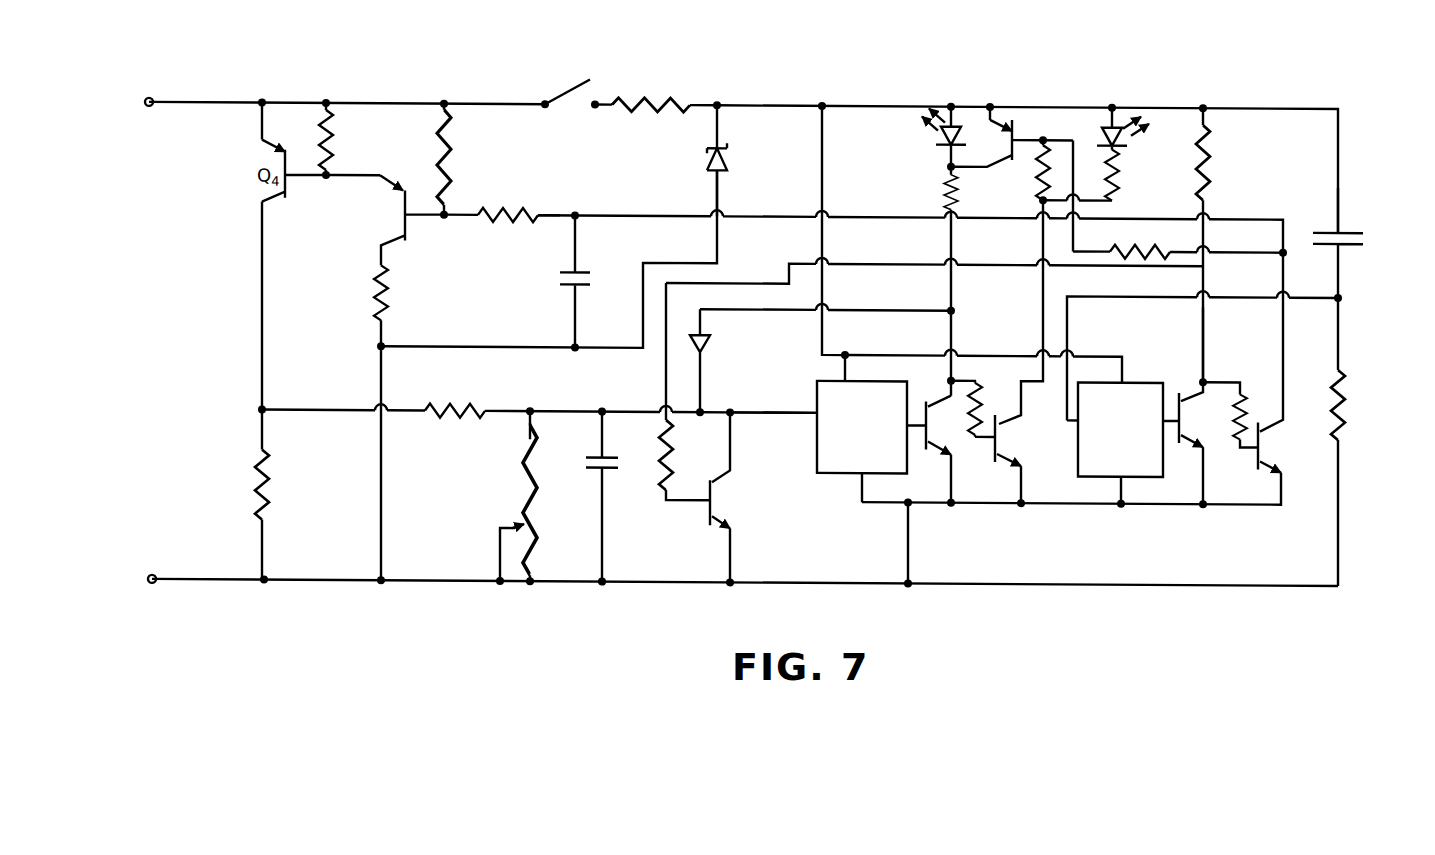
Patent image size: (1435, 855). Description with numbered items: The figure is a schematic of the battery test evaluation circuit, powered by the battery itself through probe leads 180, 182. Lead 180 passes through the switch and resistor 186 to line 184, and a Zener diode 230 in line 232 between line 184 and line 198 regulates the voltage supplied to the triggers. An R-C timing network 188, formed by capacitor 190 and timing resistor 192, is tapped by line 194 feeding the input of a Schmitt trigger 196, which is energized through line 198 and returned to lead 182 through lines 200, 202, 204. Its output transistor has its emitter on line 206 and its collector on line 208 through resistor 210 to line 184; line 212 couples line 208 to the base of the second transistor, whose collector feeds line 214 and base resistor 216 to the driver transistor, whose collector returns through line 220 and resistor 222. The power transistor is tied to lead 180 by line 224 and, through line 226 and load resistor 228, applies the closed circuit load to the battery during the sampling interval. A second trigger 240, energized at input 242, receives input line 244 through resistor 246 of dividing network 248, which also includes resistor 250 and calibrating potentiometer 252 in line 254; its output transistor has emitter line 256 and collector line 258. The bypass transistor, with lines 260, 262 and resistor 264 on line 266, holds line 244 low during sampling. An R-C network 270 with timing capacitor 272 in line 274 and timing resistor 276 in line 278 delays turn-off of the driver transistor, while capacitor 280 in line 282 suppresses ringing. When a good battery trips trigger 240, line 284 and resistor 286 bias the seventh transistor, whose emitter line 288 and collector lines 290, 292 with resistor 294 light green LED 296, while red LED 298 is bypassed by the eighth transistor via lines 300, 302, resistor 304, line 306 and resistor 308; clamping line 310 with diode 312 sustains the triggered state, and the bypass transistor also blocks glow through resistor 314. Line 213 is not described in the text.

The probe lead 180 is at (210, 101).
The probe lead 182 is at (215, 578).
The line 184 is at (753, 101).
The resistor 186 is at (656, 98).
The R-C timing network 188 is at (1362, 236).
The capacitor 190 is at (1322, 228).
The timing resistor 192 is at (1346, 400).
The line 194 is at (1127, 292).
The trigger 196 is at (1128, 429).
The line 198 is at (984, 348).
The line 200 is at (1124, 487).
The line 202 is at (1060, 497).
The line 204 is at (911, 559).
The line 206 is at (1206, 492).
The line 208 is at (1205, 304).
The resistor 210 is at (1215, 162).
The line 212 is at (1227, 376).
The line 213 is at (1234, 426).
The line 214 is at (610, 211).
The base resistor 216 is at (506, 206).
The line 220 is at (384, 254).
The resistor 222 is at (388, 297).
The line 224 is at (265, 134).
The line 226 is at (262, 297).
The resistor 228 is at (260, 489).
The Zener diode 230 is at (730, 150).
The line 232 is at (725, 132).
The trigger 240 is at (871, 442).
The energization input 242 is at (850, 372).
The input line 244 is at (745, 407).
The resistor 246 is at (467, 405).
The dividing network 248 is at (500, 487).
The resistor 250 is at (522, 452).
The calibrating potentiometer 252 is at (537, 545).
The line 254 is at (536, 426).
The line 256 is at (953, 488).
The line 258 is at (955, 296).
The line 260 is at (728, 451).
The line 262 is at (736, 551).
The resistor 264 is at (660, 470).
The line 266 is at (666, 377).
The R-C network 270 is at (511, 249).
The timing capacitor 272 is at (584, 270).
The line 274 is at (560, 274).
The timing resistor 276 is at (440, 148).
The line 278 is at (440, 200).
The capacitor 280 is at (611, 455).
The line 282 is at (600, 492).
The line 284 is at (976, 377).
The resistor 286 is at (974, 414).
The line 288 is at (1023, 490).
The line 290 is at (1045, 296).
The line 292 is at (1113, 195).
The resistor 294 is at (1144, 175).
The light emitting diode 296 is at (1110, 120).
The light-emitting diode 298 is at (945, 120).
The line 300 is at (1006, 124).
The line 302 is at (974, 169).
The resistor 304 is at (1043, 197).
The line 306 is at (1050, 140).
The resistor 308 is at (1135, 247).
The clamping line 310 is at (770, 308).
The diode 312 is at (705, 350).
The resistor 314 is at (946, 194).